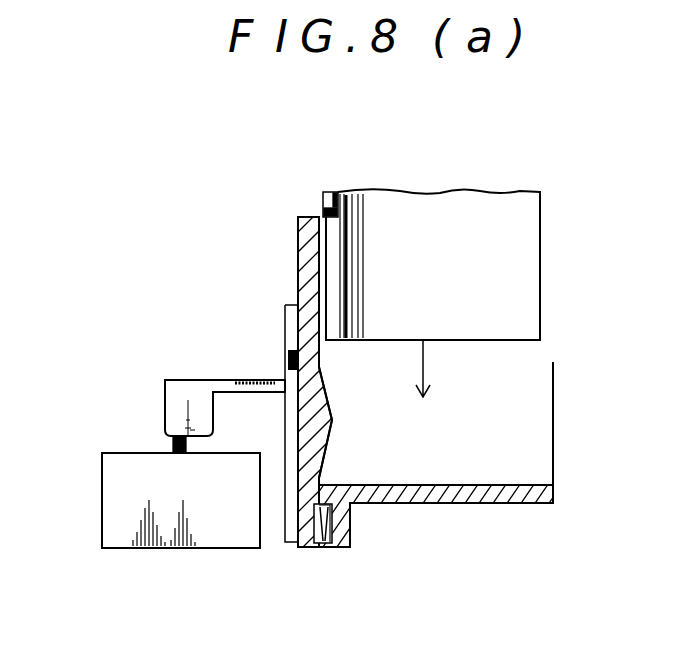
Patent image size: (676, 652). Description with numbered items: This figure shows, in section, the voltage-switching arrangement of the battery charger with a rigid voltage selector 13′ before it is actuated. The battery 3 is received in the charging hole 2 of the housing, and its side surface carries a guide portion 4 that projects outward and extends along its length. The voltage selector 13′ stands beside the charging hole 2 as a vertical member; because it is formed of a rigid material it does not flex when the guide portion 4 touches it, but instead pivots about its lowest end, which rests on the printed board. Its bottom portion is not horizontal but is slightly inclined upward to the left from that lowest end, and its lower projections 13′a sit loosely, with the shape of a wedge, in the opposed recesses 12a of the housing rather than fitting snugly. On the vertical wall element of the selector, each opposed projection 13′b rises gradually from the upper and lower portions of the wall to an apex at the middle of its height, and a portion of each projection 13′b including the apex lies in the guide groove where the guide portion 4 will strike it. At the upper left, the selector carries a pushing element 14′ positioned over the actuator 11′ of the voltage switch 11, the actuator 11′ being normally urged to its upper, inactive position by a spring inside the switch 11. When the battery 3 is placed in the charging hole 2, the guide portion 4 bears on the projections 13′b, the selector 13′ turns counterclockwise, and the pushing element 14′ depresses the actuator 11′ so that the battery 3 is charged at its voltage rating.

The charging hole 2 is at (530, 430).
The battery 3 is at (510, 265).
The guide portion 4 is at (333, 196).
The voltage switch 11 is at (127, 502).
The actuator 11′ is at (167, 447).
The recesses 12a is at (330, 548).
The voltage selector 13′ is at (233, 337).
The lower projections 13′a is at (323, 545).
The opposed projections 13′b is at (324, 412).
The pushing element 14′ is at (224, 383).